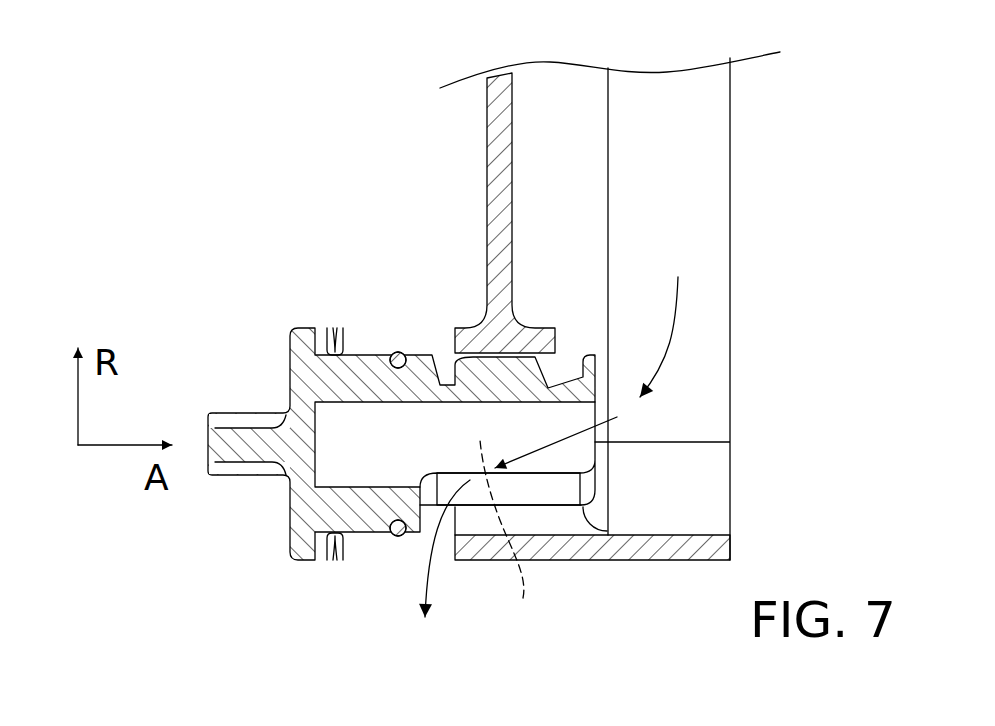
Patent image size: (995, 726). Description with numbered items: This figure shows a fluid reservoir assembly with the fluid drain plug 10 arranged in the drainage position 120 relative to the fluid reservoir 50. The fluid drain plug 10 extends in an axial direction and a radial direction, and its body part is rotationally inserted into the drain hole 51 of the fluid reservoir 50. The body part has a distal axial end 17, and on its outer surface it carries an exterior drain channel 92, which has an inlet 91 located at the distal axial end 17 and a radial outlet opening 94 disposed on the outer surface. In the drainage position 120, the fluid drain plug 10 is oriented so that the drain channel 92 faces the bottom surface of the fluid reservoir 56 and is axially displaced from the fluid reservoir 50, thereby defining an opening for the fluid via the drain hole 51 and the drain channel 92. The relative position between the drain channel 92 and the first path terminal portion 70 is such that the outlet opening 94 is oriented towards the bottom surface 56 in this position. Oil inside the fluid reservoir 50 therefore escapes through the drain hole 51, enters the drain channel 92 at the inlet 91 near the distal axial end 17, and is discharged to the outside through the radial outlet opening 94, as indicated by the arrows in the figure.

The drainage position 120 is at (290, 140).
The fluid drain plug 10 is at (248, 305).
The drain hole 51 is at (440, 345).
The fluid reservoir 50 is at (682, 182).
The bottom surface of the fluid reservoir 56 is at (593, 563).
The distal axial end 17 is at (597, 373).
The drain channel 92 is at (577, 450).
The inlet 91 is at (772, 490).
The outlet opening 94 is at (428, 525).
The first path terminal portion 70 is at (523, 600).